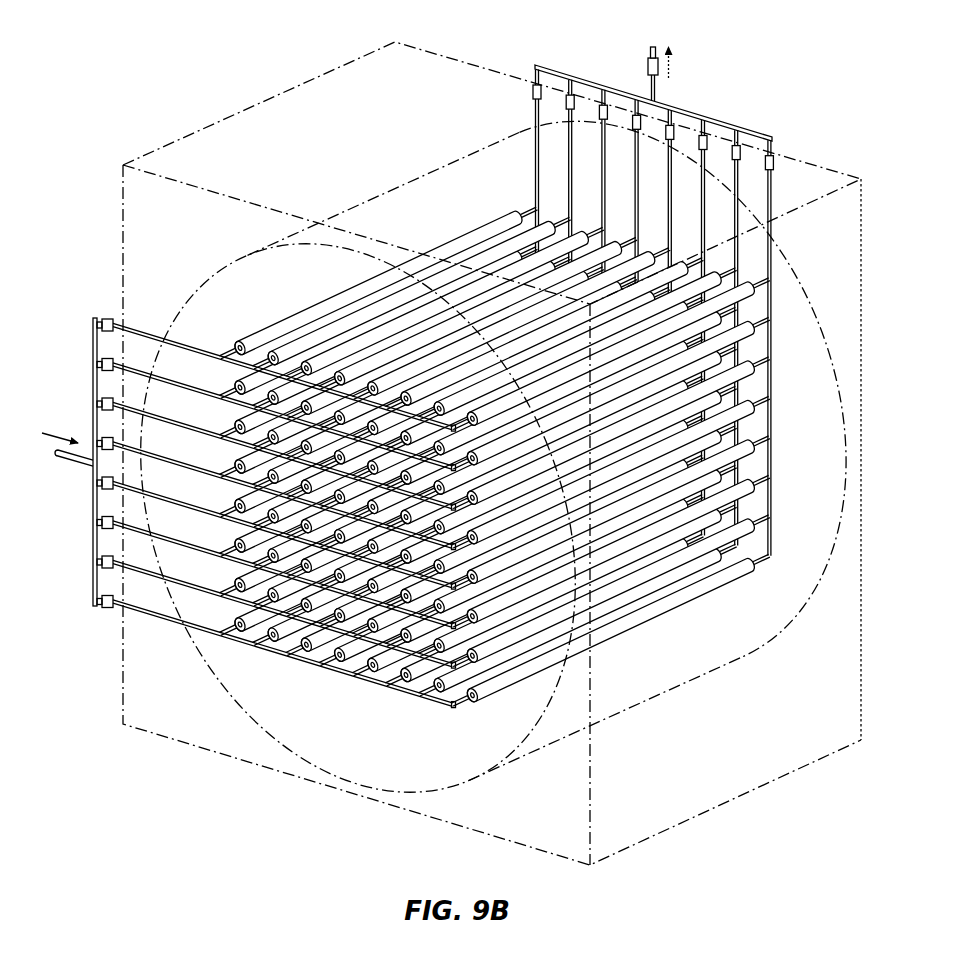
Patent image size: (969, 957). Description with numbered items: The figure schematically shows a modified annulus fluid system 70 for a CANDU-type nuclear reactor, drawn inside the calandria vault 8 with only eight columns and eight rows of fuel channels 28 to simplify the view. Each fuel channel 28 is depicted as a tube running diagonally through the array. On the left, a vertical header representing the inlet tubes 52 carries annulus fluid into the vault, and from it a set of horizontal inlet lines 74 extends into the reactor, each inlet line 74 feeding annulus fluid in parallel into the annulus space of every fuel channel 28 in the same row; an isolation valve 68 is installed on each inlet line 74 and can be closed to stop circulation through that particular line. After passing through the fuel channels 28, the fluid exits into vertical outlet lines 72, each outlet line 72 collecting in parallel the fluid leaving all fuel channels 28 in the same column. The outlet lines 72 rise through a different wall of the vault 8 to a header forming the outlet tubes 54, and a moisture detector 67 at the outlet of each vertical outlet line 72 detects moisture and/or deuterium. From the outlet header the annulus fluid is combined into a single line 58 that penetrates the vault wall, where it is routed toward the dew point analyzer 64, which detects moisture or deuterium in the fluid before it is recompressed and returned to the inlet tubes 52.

The calandria vault 8 is at (727, 803).
The fuel channel 28 is at (468, 233).
The inlet tubes 52 is at (77, 398).
The outlet tubes 54 is at (598, 70).
The single line 58 is at (658, 100).
The dew point analyzer 64 is at (648, 62).
The moisture detector 67 is at (533, 90).
The isolation valve 68 is at (110, 320).
The modified annulus fluid system 70 is at (210, 95).
The outlet line 72 is at (788, 190).
The inlet line 74 is at (152, 322).